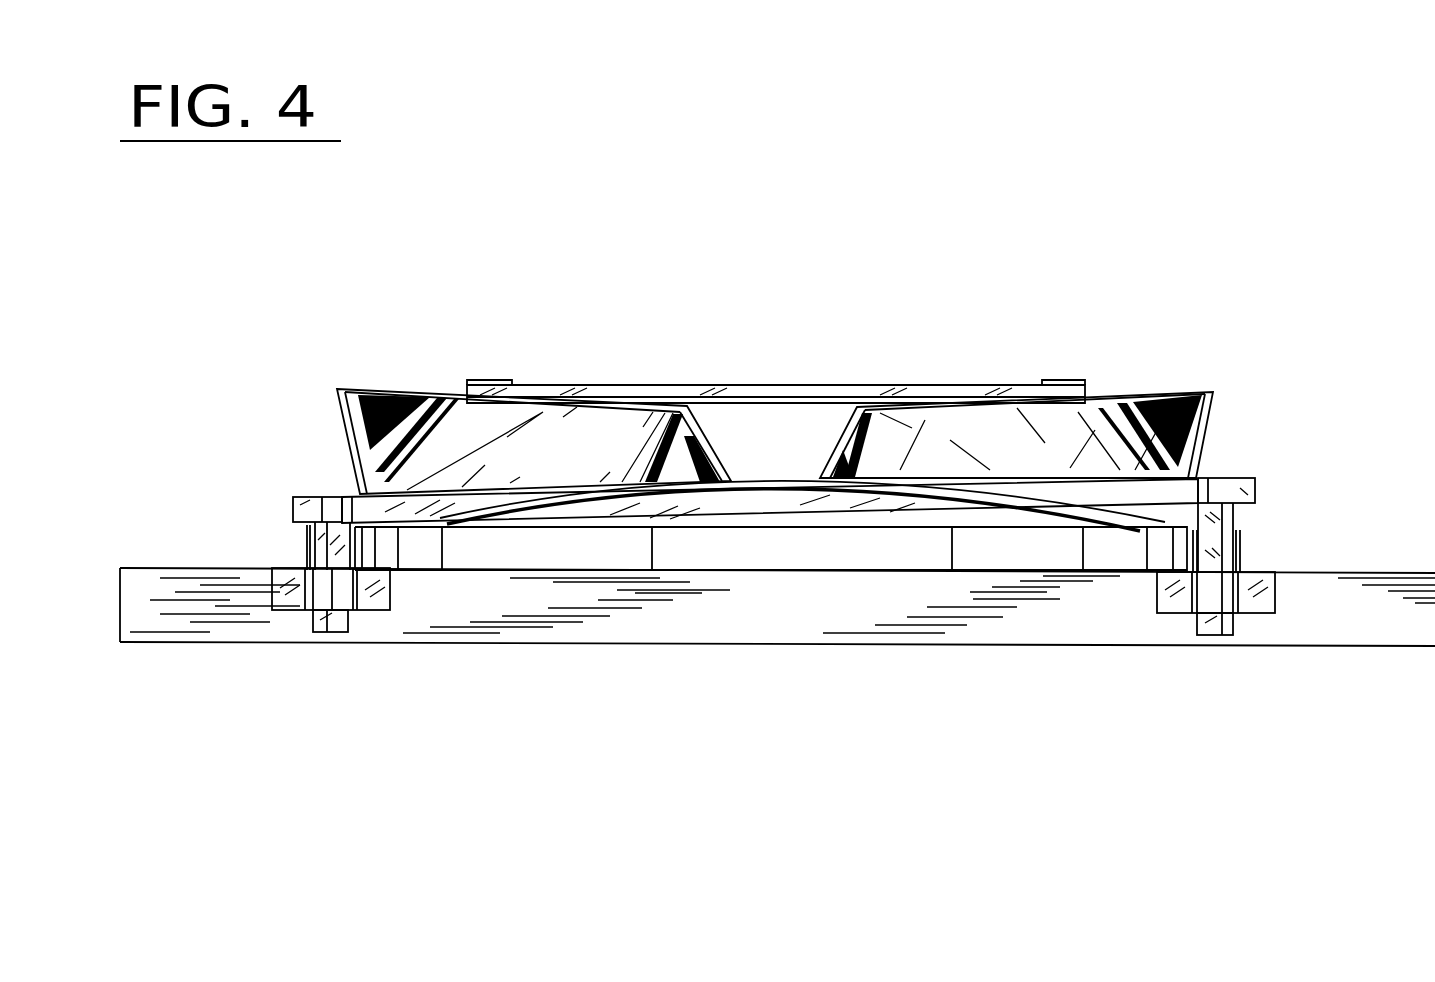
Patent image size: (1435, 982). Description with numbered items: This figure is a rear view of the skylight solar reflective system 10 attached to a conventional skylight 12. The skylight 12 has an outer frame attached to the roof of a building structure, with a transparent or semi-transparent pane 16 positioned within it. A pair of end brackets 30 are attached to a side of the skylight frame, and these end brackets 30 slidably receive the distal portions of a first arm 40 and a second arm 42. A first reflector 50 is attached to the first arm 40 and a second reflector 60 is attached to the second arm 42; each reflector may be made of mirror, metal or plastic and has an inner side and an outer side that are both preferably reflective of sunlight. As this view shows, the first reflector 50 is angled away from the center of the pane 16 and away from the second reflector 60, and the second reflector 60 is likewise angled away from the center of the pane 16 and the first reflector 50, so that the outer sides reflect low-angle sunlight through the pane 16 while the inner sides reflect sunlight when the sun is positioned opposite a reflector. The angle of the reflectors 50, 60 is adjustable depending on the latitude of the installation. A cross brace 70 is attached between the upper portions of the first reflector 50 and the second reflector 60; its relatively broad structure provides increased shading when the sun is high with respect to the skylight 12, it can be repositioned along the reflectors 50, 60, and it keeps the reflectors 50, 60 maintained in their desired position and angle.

The skylight solar reflective system 10 is at (1155, 245).
The skylight 12 is at (1038, 646).
The pane 16 is at (697, 503).
The end brackets 30 is at (283, 564).
The first arm 40 is at (310, 508).
The second arm 42 is at (1250, 485).
The first reflector 50 is at (422, 400).
The second reflector 60 is at (1133, 420).
The cross brace 70 is at (762, 390).